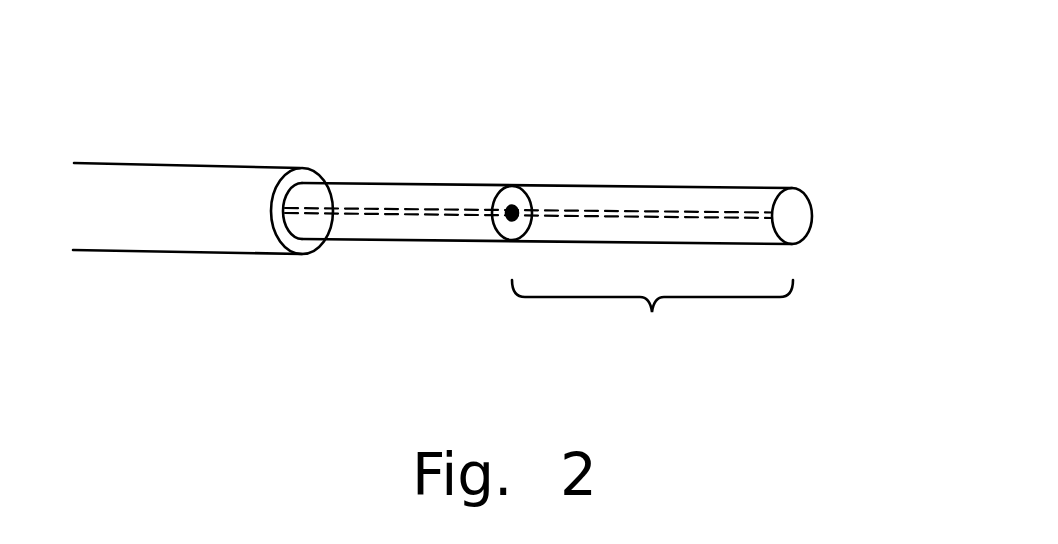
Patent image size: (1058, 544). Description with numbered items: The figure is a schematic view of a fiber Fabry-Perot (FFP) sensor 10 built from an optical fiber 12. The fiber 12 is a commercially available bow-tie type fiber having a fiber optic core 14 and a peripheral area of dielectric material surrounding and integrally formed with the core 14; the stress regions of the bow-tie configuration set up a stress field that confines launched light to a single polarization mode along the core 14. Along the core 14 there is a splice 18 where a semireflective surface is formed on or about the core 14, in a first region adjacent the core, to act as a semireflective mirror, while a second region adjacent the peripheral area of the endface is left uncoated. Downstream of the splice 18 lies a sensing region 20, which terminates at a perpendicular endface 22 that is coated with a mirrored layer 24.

The fiber Fabry-Perot sensor 10 is at (660, 85).
The fiber 12 is at (235, 252).
The core 14 is at (388, 209).
The splice 18 is at (511, 185).
The sensing region 20 is at (652, 319).
The perpendicular endface 22 is at (790, 189).
The mirrored layer 24 is at (795, 225).